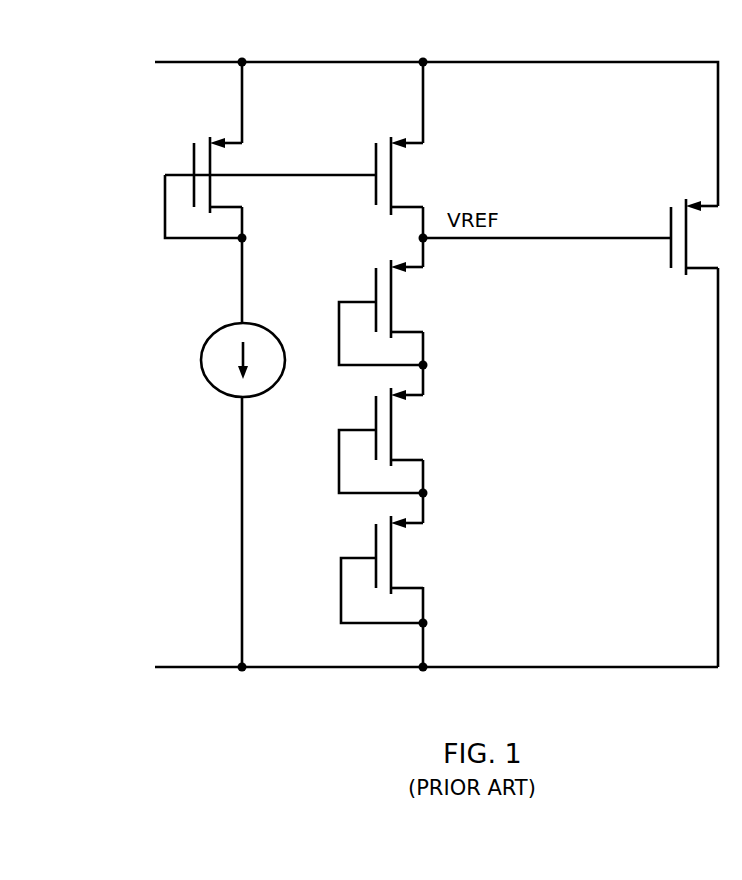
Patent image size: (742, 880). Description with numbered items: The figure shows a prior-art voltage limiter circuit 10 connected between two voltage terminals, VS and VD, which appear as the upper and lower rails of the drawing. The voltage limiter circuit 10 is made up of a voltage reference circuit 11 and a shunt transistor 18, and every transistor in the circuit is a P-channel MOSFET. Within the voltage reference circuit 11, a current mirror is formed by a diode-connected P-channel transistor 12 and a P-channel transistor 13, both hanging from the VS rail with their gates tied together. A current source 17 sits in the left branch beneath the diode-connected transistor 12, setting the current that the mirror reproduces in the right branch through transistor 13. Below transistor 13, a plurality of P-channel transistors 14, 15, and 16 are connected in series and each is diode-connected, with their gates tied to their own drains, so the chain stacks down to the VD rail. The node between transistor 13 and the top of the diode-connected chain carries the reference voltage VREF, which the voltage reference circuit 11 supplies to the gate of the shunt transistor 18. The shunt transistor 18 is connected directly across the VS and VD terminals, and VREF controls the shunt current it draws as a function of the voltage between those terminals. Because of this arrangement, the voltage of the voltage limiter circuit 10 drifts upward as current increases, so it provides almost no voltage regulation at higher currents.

The voltage limiter circuit 10 is at (276, 744).
The voltage reference circuit 11 is at (100, 60).
The diode-connected P-channel transistor 12 is at (192, 155).
The P-channel transistor 13 is at (375, 150).
The P-channel series-connected and diode-connected transistor 14 is at (375, 290).
The P-channel series-connected and diode-connected transistor 15 is at (375, 417).
The P-channel series-connected and diode-connected transistor 16 is at (375, 550).
The current source 17 is at (202, 352).
The shunt transistor 18 is at (670, 223).